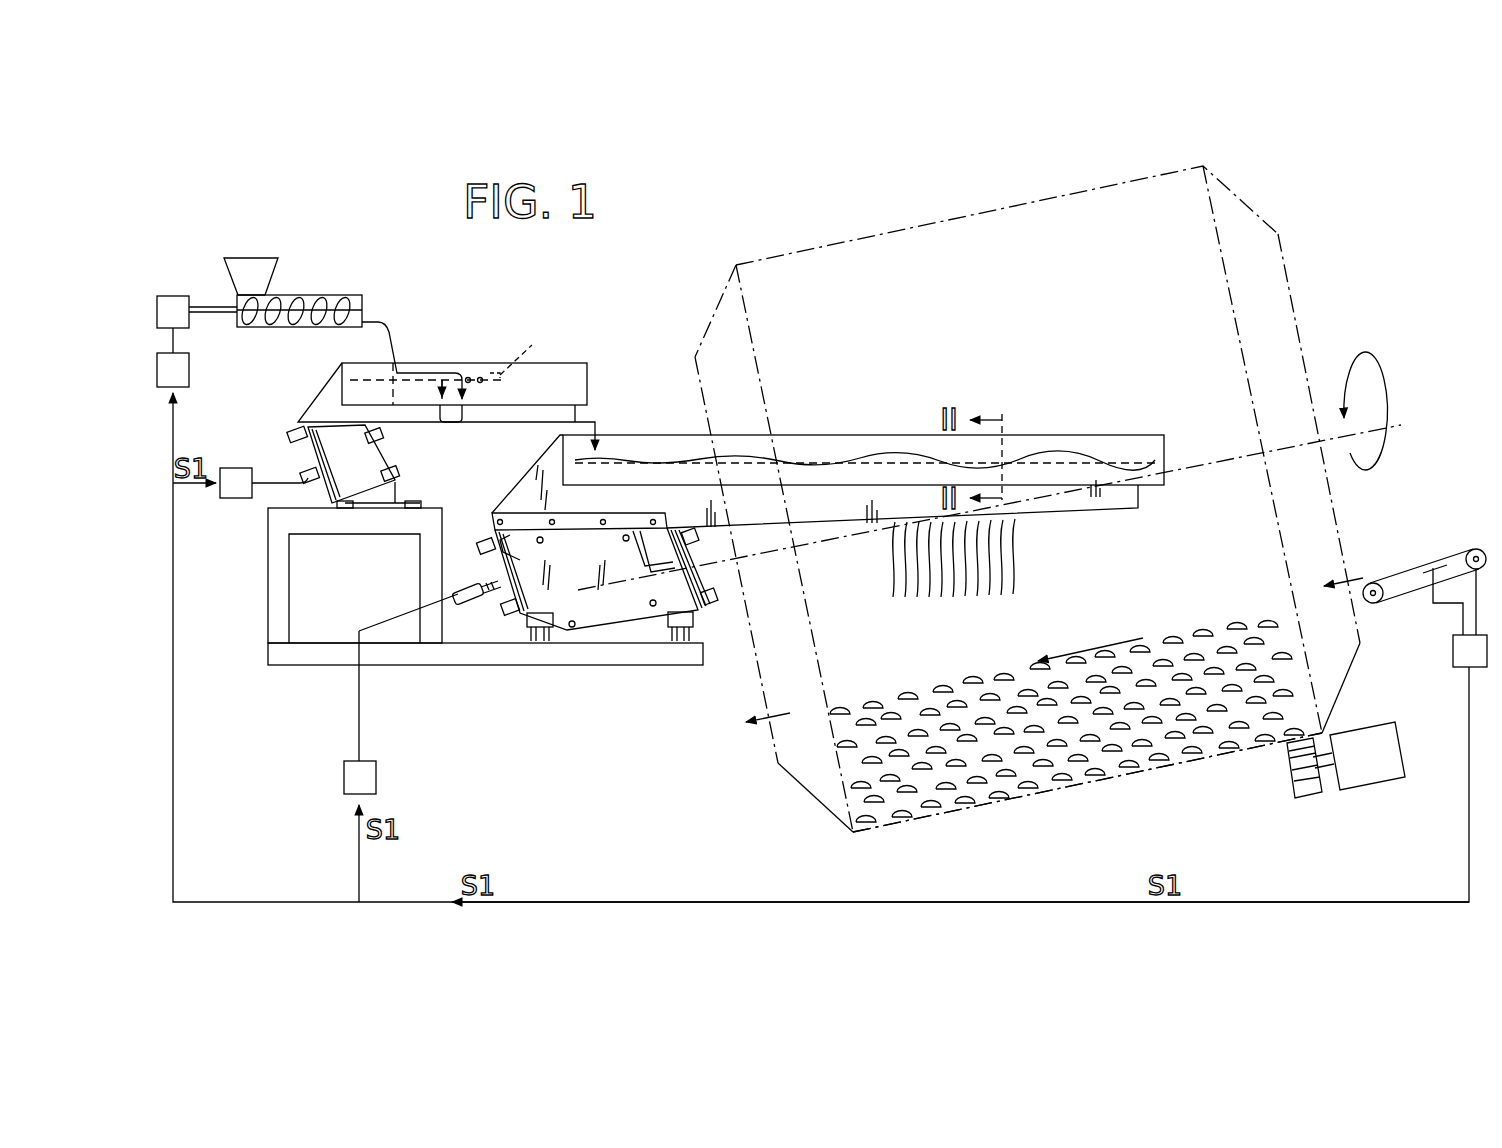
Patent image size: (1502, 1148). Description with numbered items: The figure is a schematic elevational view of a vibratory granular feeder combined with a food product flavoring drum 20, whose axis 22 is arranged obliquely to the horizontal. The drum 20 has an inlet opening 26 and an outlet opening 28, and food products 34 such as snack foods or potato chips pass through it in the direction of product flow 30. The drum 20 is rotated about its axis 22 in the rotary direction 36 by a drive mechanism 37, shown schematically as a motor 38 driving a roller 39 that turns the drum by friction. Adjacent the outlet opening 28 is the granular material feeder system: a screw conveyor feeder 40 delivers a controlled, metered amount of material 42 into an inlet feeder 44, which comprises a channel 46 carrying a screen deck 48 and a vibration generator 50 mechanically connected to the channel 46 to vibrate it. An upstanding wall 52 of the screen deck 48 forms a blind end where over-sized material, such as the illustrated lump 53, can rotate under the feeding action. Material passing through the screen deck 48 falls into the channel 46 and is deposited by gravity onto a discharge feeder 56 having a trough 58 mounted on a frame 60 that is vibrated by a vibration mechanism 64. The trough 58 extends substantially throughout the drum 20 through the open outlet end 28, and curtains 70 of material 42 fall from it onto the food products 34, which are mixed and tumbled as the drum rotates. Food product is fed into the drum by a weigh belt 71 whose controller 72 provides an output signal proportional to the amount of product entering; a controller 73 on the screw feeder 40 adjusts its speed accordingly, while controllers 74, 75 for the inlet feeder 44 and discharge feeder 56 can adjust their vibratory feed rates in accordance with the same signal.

The flavoring drum 20 is at (1030, 204).
The axis 22 is at (1393, 426).
The inlet opening 26 is at (1341, 534).
The outlet opening 28 is at (698, 378).
The direction of product flow 30 is at (1070, 653).
The food products 34 is at (1150, 774).
The rotary direction 36 is at (1354, 352).
The drive mechanism 37 is at (1333, 803).
The motor 38 is at (1375, 785).
The roller 39 is at (1289, 777).
The screw conveyor feeder 40 is at (310, 295).
The material 42 is at (839, 462).
The inlet feeder 44 is at (306, 400).
The channel 46 is at (347, 364).
The screen deck 48 is at (423, 373).
The vibration generator 50 is at (336, 466).
The upstanding wall 52 is at (521, 349).
The lump 53 is at (470, 378).
The discharge feeder 56 is at (495, 496).
The trough 58 is at (782, 435).
The frame 60 is at (823, 522).
The vibration mechanism 64 is at (538, 577).
The curtains 70 is at (1027, 556).
The weigh belt 71 is at (1413, 600).
The controller 72 is at (1452, 658).
The controller 73 is at (189, 372).
The controller 74 is at (227, 499).
The controller 75 is at (344, 777).